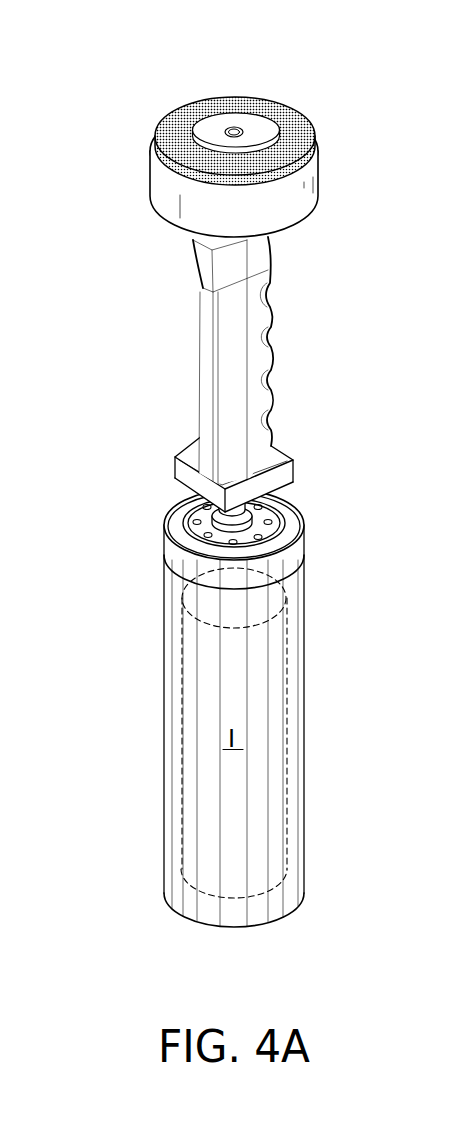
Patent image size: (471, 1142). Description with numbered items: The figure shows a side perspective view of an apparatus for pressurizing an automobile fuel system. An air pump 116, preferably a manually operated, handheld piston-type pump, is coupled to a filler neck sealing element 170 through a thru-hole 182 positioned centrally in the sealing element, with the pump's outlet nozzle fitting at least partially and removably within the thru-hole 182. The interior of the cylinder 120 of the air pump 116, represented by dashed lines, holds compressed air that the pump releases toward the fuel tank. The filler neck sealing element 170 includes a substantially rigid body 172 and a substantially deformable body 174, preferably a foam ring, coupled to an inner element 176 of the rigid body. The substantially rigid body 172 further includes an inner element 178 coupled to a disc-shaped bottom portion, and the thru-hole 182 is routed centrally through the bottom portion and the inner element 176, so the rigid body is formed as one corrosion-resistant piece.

The air pump 116 is at (165, 800).
The cylinder 120 is at (226, 708).
The filler neck sealing element 170 is at (211, 258).
The substantially rigid body 172 is at (312, 220).
The substantially deformable body 174 is at (275, 113).
The inner element 176 is at (293, 145).
The inner element 178 is at (202, 125).
The thru-hole 182 is at (233, 128).